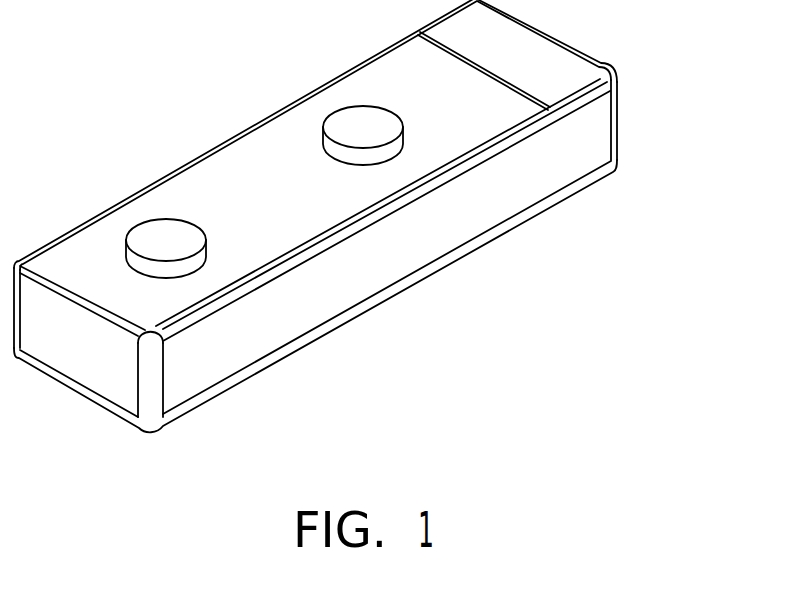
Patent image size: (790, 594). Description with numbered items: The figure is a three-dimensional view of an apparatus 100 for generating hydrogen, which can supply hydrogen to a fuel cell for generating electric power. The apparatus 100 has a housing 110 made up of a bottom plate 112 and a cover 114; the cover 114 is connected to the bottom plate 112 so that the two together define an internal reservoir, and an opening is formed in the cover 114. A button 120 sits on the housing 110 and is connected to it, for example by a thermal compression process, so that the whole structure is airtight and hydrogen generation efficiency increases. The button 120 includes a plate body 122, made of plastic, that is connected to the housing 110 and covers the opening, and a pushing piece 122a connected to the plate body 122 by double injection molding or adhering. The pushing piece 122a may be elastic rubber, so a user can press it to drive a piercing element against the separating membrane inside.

The apparatus for generating hydrogen 100 is at (703, 417).
The housing 110 is at (699, 75).
The bottom plate 112 is at (610, 170).
The cover 114 is at (616, 108).
The button 120 is at (212, 78).
The plate body 122 is at (181, 188).
The pushing piece 122a is at (166, 241).